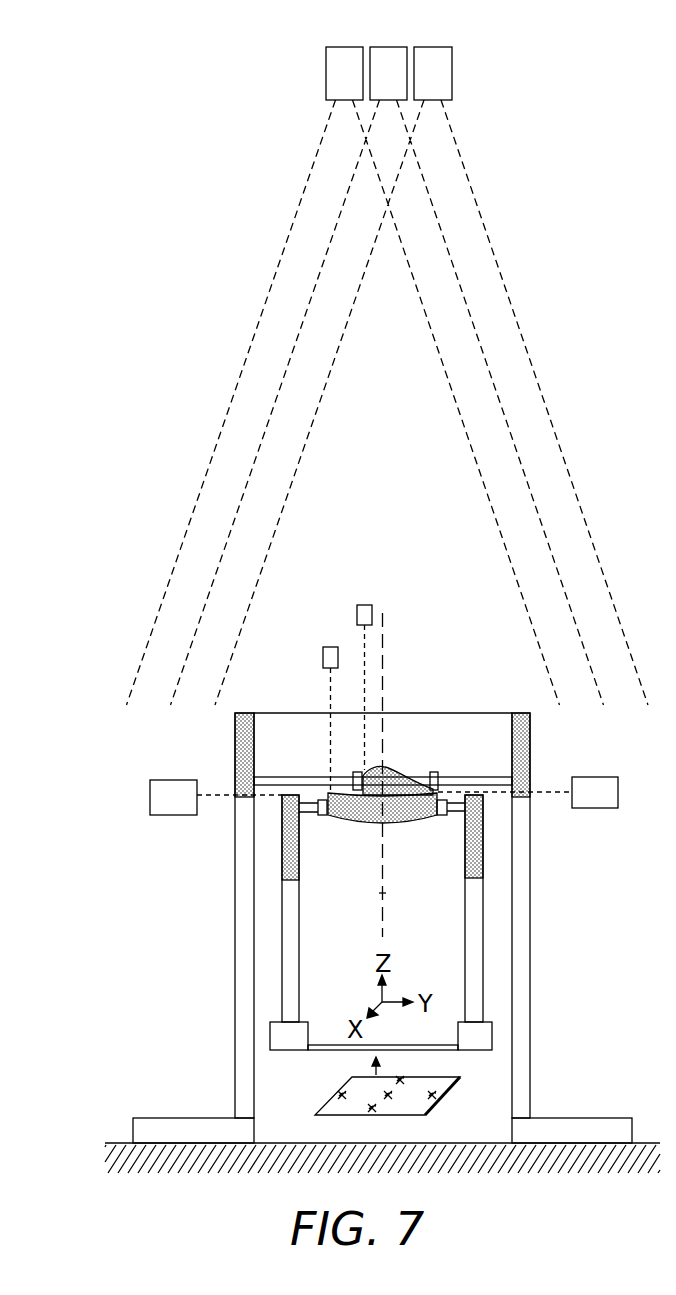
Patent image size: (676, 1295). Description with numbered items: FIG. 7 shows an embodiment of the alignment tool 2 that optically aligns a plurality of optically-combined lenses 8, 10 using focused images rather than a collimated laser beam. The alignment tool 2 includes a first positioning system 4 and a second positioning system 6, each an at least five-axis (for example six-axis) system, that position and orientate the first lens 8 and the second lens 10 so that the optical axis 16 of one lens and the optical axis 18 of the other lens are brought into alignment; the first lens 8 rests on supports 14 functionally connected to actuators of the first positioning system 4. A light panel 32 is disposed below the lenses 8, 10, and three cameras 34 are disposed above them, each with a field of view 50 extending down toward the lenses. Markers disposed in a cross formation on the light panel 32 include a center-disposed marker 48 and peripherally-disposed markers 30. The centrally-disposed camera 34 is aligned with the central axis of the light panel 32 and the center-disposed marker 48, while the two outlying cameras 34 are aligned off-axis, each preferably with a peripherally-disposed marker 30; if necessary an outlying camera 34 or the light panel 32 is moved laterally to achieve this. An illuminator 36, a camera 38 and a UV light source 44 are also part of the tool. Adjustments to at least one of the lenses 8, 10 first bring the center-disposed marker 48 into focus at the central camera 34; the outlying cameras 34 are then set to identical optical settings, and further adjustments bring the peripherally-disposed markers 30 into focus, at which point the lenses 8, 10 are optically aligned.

The alignment tool 2 is at (108, 802).
The positioning system 4 is at (483, 808).
The positioning system 6 is at (530, 742).
The lens 8 is at (352, 820).
The lens 10 is at (402, 770).
The side 14 is at (313, 777).
The optical axis of lens 16 is at (383, 893).
The optical axis of lens 18 is at (383, 657).
The peripherally-disposed marker 30 is at (340, 1093).
The light panel 32 is at (316, 1114).
The camera 34 is at (339, 47).
The illuminator 36 is at (330, 647).
The camera 38 is at (170, 780).
The UV light source 44 is at (600, 777).
The center-disposed marker 48 is at (390, 1097).
The field of view of camera 50 is at (366, 141).